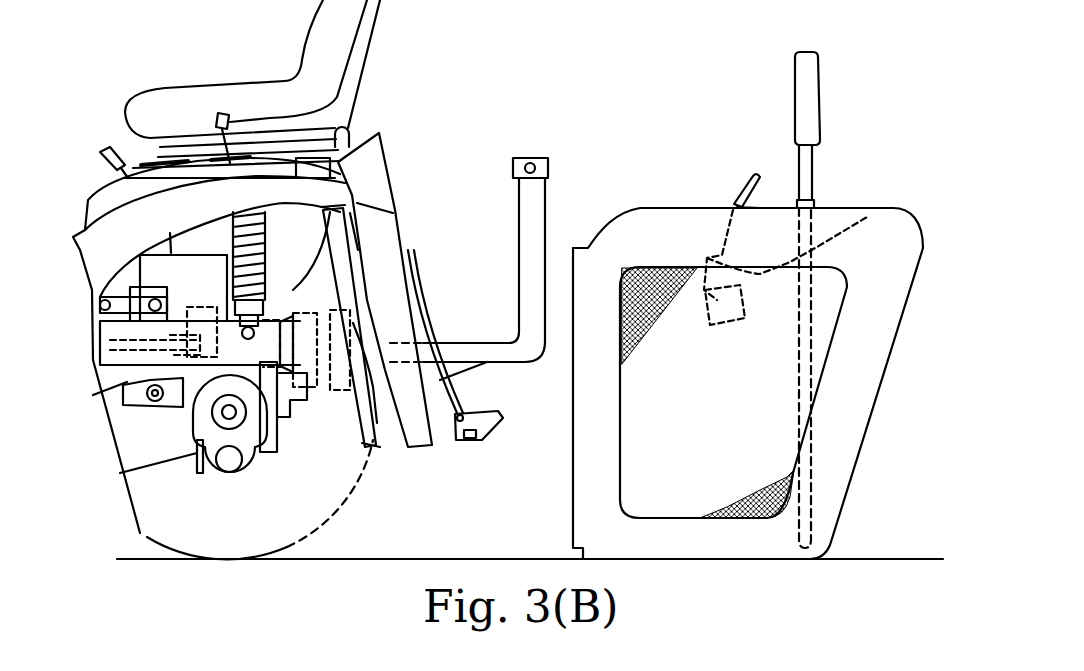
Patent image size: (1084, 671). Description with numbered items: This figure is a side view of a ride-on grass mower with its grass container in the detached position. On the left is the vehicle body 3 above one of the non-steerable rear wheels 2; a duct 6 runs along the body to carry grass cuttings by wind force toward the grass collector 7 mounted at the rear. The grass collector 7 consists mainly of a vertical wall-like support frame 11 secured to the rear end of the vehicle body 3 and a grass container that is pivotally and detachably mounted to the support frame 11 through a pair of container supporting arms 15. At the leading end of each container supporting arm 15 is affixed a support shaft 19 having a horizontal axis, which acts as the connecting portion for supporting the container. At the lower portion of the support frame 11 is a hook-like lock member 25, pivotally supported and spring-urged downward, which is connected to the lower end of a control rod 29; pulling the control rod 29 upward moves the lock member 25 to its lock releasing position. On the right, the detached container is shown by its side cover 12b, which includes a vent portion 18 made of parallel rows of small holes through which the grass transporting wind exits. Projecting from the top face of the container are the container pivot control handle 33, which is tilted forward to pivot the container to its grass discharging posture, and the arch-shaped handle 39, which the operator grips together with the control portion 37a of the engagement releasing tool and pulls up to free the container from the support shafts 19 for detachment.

The rear wheel 2 is at (347, 497).
The vehicle body 3 is at (100, 127).
The duct 6 is at (135, 472).
The grass collector 7 is at (739, 302).
The support frame 11 is at (440, 438).
The side cover 12b is at (860, 393).
The container supporting arm 15 is at (527, 226).
The vent portion 18 is at (652, 458).
The support shaft 19 is at (527, 165).
The lock member 25 is at (480, 420).
The control rod 29 is at (347, 128).
The container pivot control handle 33 is at (810, 93).
The control portion 37a is at (757, 203).
The handle 39 is at (740, 197).